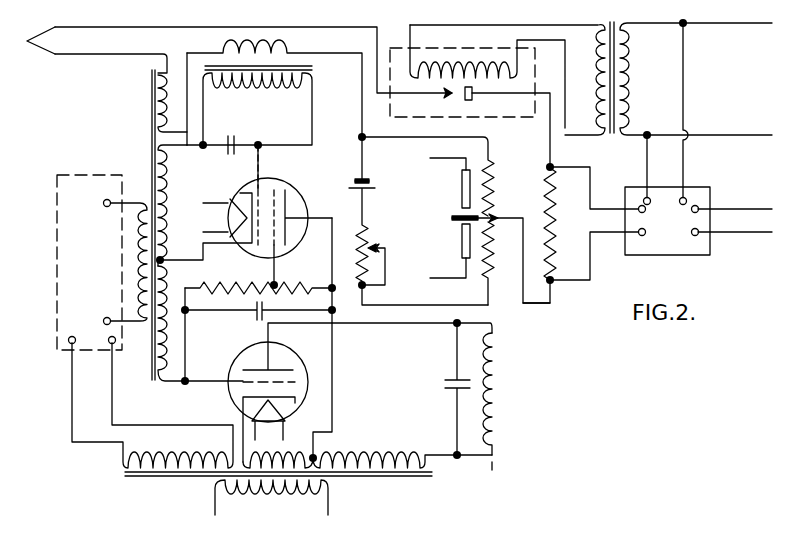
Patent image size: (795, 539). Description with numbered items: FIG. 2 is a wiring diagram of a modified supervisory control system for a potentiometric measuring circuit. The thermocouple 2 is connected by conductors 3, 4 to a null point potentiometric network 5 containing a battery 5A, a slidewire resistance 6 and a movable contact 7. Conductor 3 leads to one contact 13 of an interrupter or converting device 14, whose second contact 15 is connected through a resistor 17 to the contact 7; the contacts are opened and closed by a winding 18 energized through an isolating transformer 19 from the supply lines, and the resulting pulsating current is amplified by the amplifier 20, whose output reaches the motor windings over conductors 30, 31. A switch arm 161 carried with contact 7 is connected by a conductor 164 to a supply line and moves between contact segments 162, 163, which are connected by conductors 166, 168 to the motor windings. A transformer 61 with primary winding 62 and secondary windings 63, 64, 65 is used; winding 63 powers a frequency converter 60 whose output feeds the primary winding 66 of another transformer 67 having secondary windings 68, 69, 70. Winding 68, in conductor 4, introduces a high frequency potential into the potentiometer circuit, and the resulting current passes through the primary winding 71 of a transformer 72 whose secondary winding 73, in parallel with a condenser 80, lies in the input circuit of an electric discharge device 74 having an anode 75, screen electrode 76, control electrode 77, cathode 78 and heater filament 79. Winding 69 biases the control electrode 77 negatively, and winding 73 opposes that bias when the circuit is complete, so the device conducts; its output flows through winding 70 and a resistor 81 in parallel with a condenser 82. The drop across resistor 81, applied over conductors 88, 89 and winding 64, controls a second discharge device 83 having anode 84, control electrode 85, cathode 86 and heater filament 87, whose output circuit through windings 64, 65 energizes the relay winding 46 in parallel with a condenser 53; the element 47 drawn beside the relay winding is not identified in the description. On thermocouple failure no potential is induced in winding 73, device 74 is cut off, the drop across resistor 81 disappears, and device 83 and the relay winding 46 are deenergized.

The thermocouple 2 is at (40, 47).
The conductor 3 is at (106, 27).
The conductor 4 is at (77, 56).
The null point potentiometric network 5 is at (418, 166).
The battery 5A is at (351, 181).
The slidewire resistance 6 is at (490, 172).
The contact 7 is at (500, 215).
The contact 13 is at (455, 93).
The interrupter or converting device 14 is at (398, 47).
The second contact 15 is at (472, 100).
The resistor 17 is at (546, 190).
The winding 18 is at (440, 65).
The isolating transformer 19 is at (604, 22).
The amplifier 20 is at (680, 258).
The conductor 30 is at (732, 206).
The conductor 31 is at (750, 235).
The relay winding 46 is at (499, 348).
The coil section 47 is at (520, 355).
The condenser 53 is at (440, 382).
The frequency converter 60 is at (56, 288).
The transformer 61 is at (122, 475).
The primary winding 62 is at (260, 495).
The secondary winding 63 is at (180, 456).
The secondary winding 64 is at (280, 452).
The secondary winding 65 is at (370, 455).
The primary winding 66 is at (141, 212).
The transformer 67 is at (151, 112).
The secondary winding 68 is at (151, 80).
The secondary winding 69 is at (172, 180).
The secondary winding 70 is at (170, 275).
The primary winding 71 is at (232, 52).
The transformer 72 is at (317, 68).
The secondary winding 73 is at (292, 90).
The electric discharge device 74 is at (304, 212).
The anode 75 is at (287, 192).
The screen electrode 76 is at (274, 189).
The control electrode 77 is at (257, 189).
The cathode 78 is at (247, 246).
The heater filament 79 is at (238, 212).
The condenser 80 is at (233, 135).
The resistor 81 is at (250, 287).
The condenser 82 is at (255, 316).
The electric discharge device 83 is at (228, 379).
The anode 84 is at (257, 366).
The control electrode 85 is at (292, 375).
The cathode 86 is at (242, 402).
The heater filament 87 is at (288, 409).
The conductor 88 is at (333, 366).
The conductor 89 is at (186, 386).
The switch arm 161 is at (455, 220).
The contact segment 162 is at (462, 245).
The contact segment 163 is at (462, 186).
The conductor 164 is at (452, 217).
The conductor 166 is at (463, 278).
The conductor 168 is at (431, 162).